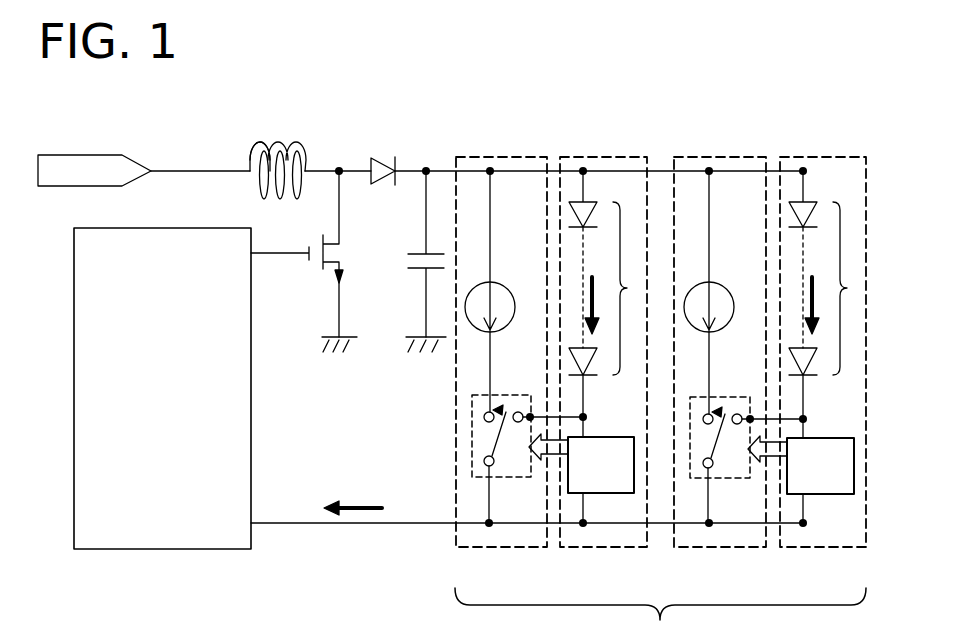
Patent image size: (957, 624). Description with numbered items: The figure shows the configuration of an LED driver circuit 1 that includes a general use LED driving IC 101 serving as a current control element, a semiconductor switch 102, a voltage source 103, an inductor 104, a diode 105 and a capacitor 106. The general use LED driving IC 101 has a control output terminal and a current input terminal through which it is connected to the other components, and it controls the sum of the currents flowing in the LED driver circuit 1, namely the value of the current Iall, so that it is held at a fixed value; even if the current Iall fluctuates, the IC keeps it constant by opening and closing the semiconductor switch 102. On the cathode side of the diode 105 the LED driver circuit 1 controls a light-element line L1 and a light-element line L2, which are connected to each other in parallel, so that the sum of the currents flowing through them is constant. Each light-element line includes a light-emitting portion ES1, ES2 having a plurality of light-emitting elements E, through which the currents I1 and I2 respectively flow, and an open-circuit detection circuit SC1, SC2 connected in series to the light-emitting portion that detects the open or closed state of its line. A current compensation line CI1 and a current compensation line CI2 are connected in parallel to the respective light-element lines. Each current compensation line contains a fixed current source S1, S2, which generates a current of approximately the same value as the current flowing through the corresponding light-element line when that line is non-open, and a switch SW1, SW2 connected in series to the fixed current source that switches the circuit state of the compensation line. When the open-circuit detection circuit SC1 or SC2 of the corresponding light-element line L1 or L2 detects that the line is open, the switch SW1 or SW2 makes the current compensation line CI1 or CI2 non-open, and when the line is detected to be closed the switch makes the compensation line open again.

The LED driver circuit 1 is at (418, 88).
The general use LED driving IC 101 is at (165, 551).
The semiconductor switch 102 is at (318, 266).
The voltage source 103 is at (90, 156).
The inductor 104 is at (283, 145).
The diode 105 is at (384, 158).
The capacitor 106 is at (410, 262).
The current compensation line CI1 is at (501, 549).
The current compensation line CI2 is at (720, 549).
The light-element line L1 is at (603, 549).
The light-element line L2 is at (823, 549).
The fixed current source S1 is at (506, 284).
The fixed current source S2 is at (725, 284).
The switch SW1 is at (506, 390).
The switch SW2 is at (726, 390).
The open-circuit detection circuit SC1 is at (590, 437).
The open-circuit detection circuit SC2 is at (810, 438).
The light-emitting element E is at (588, 217).
The light-emitting portion ES1 is at (640, 288).
The light-emitting portion ES2 is at (860, 288).
The current I1 is at (600, 305).
The current I2 is at (820, 305).
The current Iall is at (353, 495).